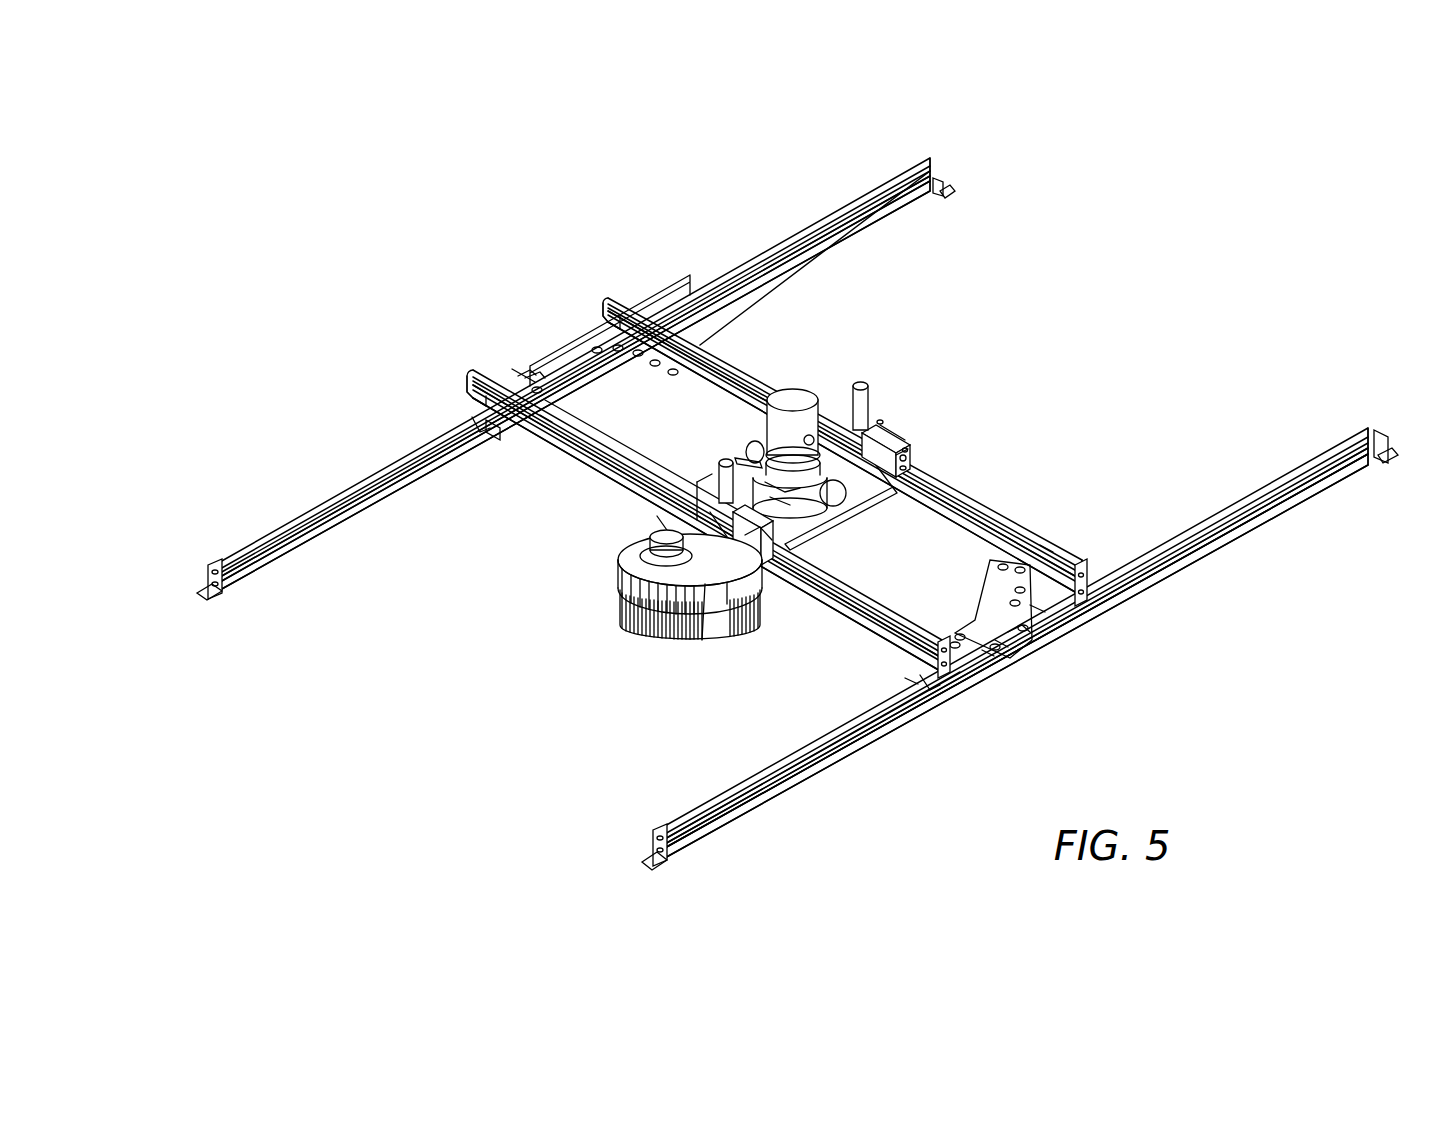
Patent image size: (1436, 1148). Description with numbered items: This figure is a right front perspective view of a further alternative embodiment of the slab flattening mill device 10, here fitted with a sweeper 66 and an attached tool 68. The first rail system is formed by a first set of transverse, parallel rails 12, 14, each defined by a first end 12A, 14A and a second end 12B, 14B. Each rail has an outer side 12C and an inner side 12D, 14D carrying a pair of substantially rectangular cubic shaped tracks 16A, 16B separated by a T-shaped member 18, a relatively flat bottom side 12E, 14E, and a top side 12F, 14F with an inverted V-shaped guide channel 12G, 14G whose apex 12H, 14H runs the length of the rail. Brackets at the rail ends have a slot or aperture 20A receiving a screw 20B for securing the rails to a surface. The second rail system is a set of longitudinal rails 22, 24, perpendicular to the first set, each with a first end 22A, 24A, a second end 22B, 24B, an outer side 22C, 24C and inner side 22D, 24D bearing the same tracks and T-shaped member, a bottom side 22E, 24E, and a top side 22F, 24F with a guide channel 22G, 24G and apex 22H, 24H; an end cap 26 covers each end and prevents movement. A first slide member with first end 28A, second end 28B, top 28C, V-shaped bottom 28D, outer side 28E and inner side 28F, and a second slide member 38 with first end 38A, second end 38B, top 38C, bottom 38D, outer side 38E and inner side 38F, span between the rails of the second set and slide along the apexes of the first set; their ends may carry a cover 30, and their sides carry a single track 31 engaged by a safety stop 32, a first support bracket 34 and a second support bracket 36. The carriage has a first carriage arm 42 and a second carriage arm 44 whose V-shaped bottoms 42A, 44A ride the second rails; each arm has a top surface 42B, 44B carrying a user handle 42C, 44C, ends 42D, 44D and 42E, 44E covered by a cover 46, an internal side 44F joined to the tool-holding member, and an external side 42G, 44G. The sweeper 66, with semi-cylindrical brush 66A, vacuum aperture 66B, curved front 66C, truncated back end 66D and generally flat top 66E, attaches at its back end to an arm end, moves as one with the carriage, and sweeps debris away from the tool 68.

The slab flattening mill device 10 is at (325, 245).
The first rail 12 is at (1330, 497).
The first end of rail 12A is at (665, 830).
The second end of rail 12B is at (1370, 430).
The outer side of rail 12C is at (1265, 515).
The inner side of rail 12D is at (1210, 515).
The bottom side of rail 12E is at (700, 845).
The top side of rail 12F is at (760, 785).
The inverted V-shaped guide channel 12G is at (785, 765).
The apex 12H is at (710, 795).
The first rail 14 is at (315, 518).
The first end of rail 14A is at (215, 570).
The second end of rail 14B is at (926, 158).
The inner side of rail 14D is at (830, 245).
The bottom side of rail 14E is at (280, 535).
The top side of rail 14F is at (350, 500).
The inverted V-shaped guide channel 14G is at (400, 485).
The apex 14H is at (770, 252).
The track 16A is at (248, 595).
The track 16B is at (240, 560).
The T-shaped member 18 is at (345, 520).
The slot or aperture 20A is at (205, 580).
The screw 20B is at (945, 180).
The second rail 22 is at (858, 597).
The first end of second rail 22A is at (968, 652).
The second end of second rail 22B is at (475, 385).
The outer side of second rail 22C is at (880, 640).
The inner side of second rail 22D is at (830, 566).
The bottom side of second rail 22E is at (898, 598).
The top side of second rail 22F is at (570, 421).
The inverted V-shaped guide channel 22G is at (530, 420).
The apex 22H is at (605, 443).
The second rail 24 is at (1050, 520).
The first end of second rail 24A is at (1090, 580).
The second end of second rail 24B is at (615, 290).
The outer side of second rail 24C is at (990, 512).
The inner side of second rail 24D is at (975, 527).
The bottom side of second rail 24E is at (925, 512).
The top side of second rail 24F is at (790, 345).
The inverted V-shaped guide channel 24G is at (735, 350).
The apex 24H is at (800, 375).
The end cap 26 is at (600, 325).
The first end of first slide member 28A is at (950, 660).
The second end of first slide member 28B is at (1088, 568).
The top of first slide member 28C is at (1037, 610).
The bottom of first slide member 28D is at (912, 680).
The outer side of first slide member 28E is at (1000, 643).
The inner side of first slide member 28F is at (990, 622).
The cover 30 is at (478, 430).
The track 31 is at (987, 653).
The safety stop 32 is at (523, 380).
The first support bracket 34 is at (672, 365).
The second support bracket 36 is at (545, 420).
The second slide member 38 is at (476, 370).
The first end of second slide member 38A is at (468, 393).
The second end of second slide member 38B is at (648, 300).
The top of second slide member 38C is at (530, 376).
The bottom of second slide member 38D is at (495, 430).
The outer side of second slide member 38E is at (533, 375).
The inner side of second slide member 38F is at (570, 378).
The first carriage arm 42 is at (697, 487).
The bottom of first carriage arm 42A is at (760, 540).
The carriage top 42B is at (697, 482).
The user handle 42C is at (743, 460).
The end of first carriage arm 42D is at (697, 485).
The second end of first carriage arm 42E is at (752, 545).
The external side of first carriage arm 42G is at (737, 465).
The second carriage arm 44 is at (908, 438).
The bottom of second carriage arm 44A is at (913, 452).
The carriage top 44B is at (897, 415).
The user handle 44C is at (885, 420).
The end of second carriage arm 44D is at (860, 385).
The second end of second carriage arm 44E is at (905, 445).
The internal side of second carriage arm 44F is at (907, 437).
The external side of second carriage arm 44G is at (905, 490).
The cover 46 is at (913, 450).
The sweeper 66 is at (665, 540).
The semi-cylindrical brush 66A is at (617, 590).
The aperture 66B is at (633, 563).
The front of sweeper 66C is at (617, 590).
The back end of sweeper 66D is at (735, 550).
The top of sweeper 66E is at (708, 553).
The tool 68 is at (787, 396).